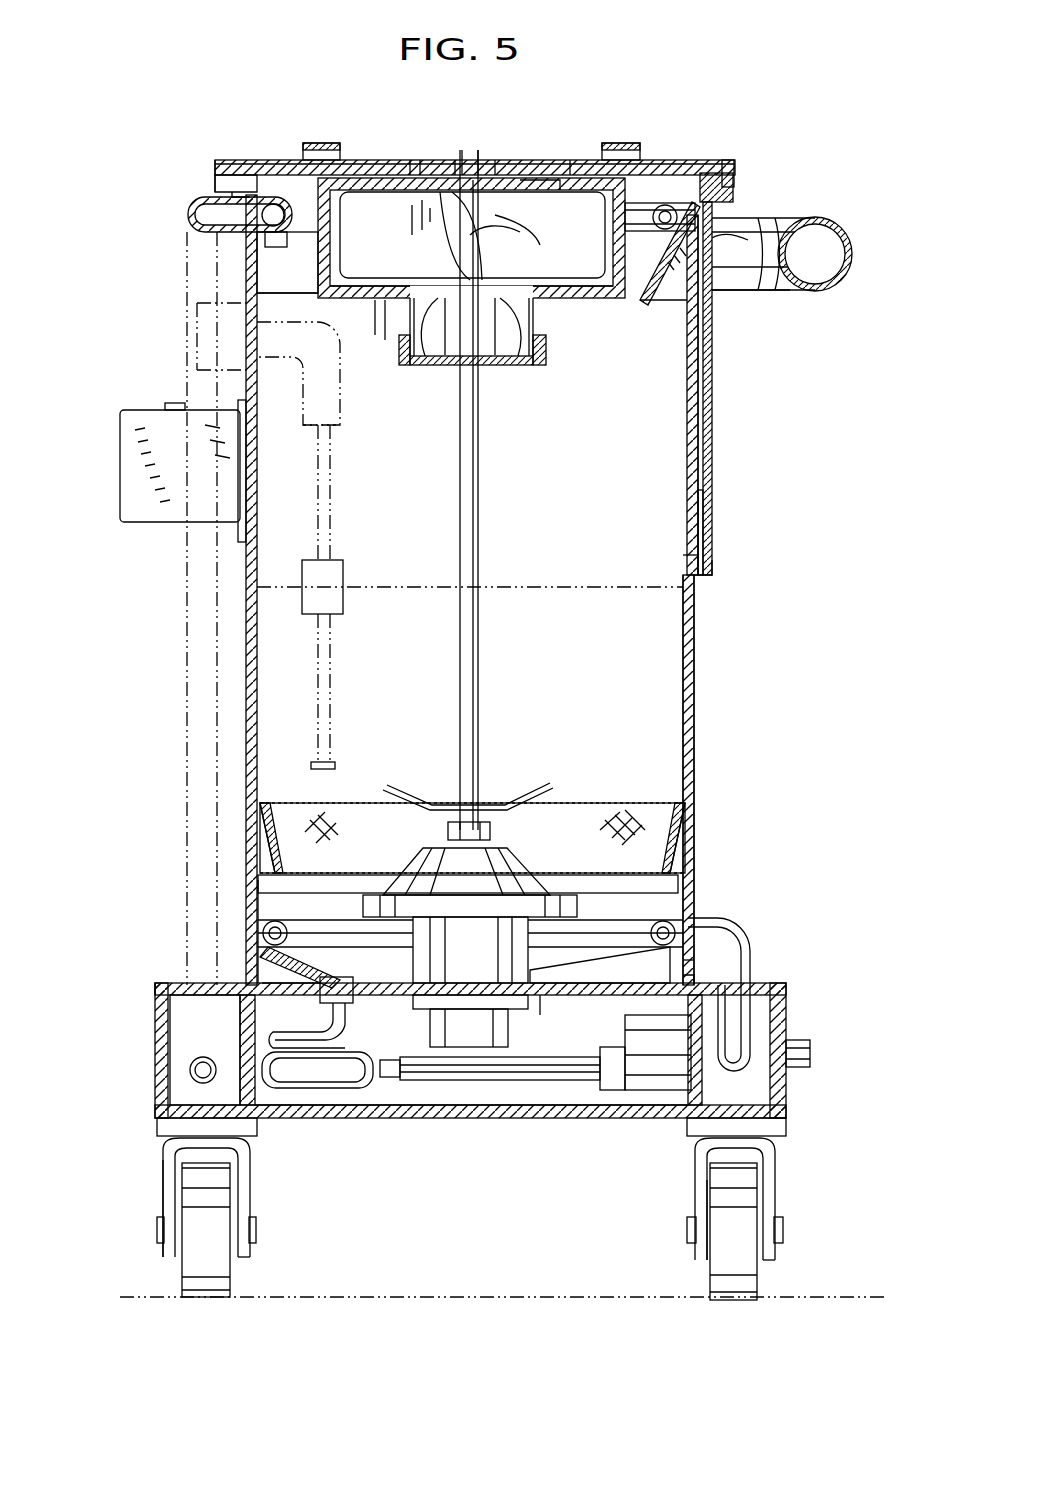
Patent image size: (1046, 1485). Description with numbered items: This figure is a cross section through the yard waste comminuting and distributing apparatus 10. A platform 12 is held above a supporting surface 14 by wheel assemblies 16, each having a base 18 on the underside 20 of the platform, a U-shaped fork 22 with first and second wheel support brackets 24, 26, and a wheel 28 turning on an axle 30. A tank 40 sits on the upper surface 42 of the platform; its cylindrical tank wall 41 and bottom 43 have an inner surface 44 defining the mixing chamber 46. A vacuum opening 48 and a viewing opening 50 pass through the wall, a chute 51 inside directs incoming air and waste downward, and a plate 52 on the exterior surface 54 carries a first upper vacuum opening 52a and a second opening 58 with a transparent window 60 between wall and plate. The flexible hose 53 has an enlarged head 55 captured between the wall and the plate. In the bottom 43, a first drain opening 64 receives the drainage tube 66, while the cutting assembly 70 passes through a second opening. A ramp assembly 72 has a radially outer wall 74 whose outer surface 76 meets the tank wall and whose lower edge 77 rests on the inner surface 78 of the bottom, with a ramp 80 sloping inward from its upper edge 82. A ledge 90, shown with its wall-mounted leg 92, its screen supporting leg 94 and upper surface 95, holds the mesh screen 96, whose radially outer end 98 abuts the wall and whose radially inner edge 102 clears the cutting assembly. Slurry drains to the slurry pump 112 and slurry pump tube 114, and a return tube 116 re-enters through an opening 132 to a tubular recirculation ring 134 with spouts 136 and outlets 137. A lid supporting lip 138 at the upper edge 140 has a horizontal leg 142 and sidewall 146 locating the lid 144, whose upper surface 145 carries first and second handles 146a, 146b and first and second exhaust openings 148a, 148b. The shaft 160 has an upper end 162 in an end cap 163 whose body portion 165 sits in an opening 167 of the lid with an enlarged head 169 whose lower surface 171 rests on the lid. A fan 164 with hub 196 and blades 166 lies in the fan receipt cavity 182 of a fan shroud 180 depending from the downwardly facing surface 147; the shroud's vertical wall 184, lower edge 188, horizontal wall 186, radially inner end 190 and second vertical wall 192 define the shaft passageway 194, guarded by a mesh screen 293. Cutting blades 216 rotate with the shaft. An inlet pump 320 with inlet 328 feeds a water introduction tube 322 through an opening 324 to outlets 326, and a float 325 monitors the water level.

The apparatus for comminuting and distributing yard waste 10 is at (740, 662).
The platform 12 is at (156, 1024).
The supporting surface 14 is at (395, 1297).
The wheel assembly 16 is at (130, 1165).
The base 18 is at (250, 1136).
The underside 20 is at (405, 1118).
The fork 22 is at (252, 1183).
The first wheel support bracket 24 is at (163, 1195).
The second wheel support bracket 26 is at (252, 1257).
The wheel 28 is at (205, 1283).
The axle 30 is at (170, 1232).
The tank 40 is at (694, 613).
The tank wall 41 is at (696, 745).
The upper surface 42 is at (160, 983).
The bottom 43 is at (595, 992).
The inner surface 44 is at (695, 708).
The mixing chamber 46 is at (608, 670).
The vacuum opening 48 is at (682, 300).
The viewing opening 50 is at (690, 558).
The chute 51 is at (640, 300).
The plate 52 is at (712, 437).
The first upper vacuum opening 52a is at (720, 292).
The flexible hose 53 is at (788, 218).
The exterior surface 54 is at (696, 645).
The enlarged head 55 is at (720, 240).
The second opening 58 is at (712, 560).
The transparent window 60 is at (702, 505).
The first drain opening 64 is at (335, 983).
The drainage tube 66 is at (350, 1000).
The cutting assembly 70 is at (540, 842).
The ramp assembly 72 is at (700, 950).
The radially outer wall 74 is at (262, 975).
The outer surface 76 is at (700, 975).
The lower edge 77 is at (262, 983).
The inner surface 78 is at (326, 805).
The ramp 80 is at (668, 918).
The upper edge 82 is at (690, 930).
The ledge 90 is at (262, 905).
The link 92 is at (258, 920).
The screen supporting leg 94 is at (272, 870).
The upper surface 95 is at (276, 870).
The mesh screen 96 is at (350, 870).
The radially outer end 98 is at (690, 828).
The radially inner edge 102 is at (403, 885).
The slurry pump 112 is at (440, 1080).
The slurry pump tube 114 is at (310, 1088).
The return tube 116 is at (190, 210).
The opening 132 is at (212, 165).
The tubular recirculation ring 134 is at (290, 160).
The spout 136 is at (290, 262).
The outlet 137 is at (268, 245).
The lid supporting lip 138 is at (220, 160).
The upper edge 140 is at (690, 195).
The horizontal leg 142 is at (725, 160).
The lid 144 is at (366, 160).
The upper surface 145 is at (412, 160).
The sidewall 146 is at (735, 172).
The first handle 146a is at (318, 143).
The second handle 146b is at (630, 143).
The downwardly facing surface 147 is at (545, 190).
The first exhaust opening 148a is at (388, 160).
The second exhaust opening 148b is at (570, 160).
The shaft 160 is at (480, 484).
The upper end 162 is at (492, 335).
The end cap 163 is at (480, 160).
The fan 164 is at (570, 292).
The body portion 165 is at (463, 150).
The blade 166 is at (408, 270).
The opening 167 is at (490, 190).
The enlarged head 169 is at (415, 185).
The lower surface 171 is at (498, 165).
The fan shroud 180 is at (570, 300).
The fan receipt cavity 182 is at (555, 300).
The vertical wall 184 is at (342, 300).
The horizontal wall 186 is at (392, 300).
The lower edge 188 is at (318, 293).
The radially inner end 190 is at (450, 365).
The second vertical wall 192 is at (428, 360).
The shaft passageway 194 is at (492, 345).
The hub 196 is at (472, 238).
The blade 216 is at (490, 800).
The mesh screen 293 is at (410, 400).
The inlet pump 320 is at (648, 1085).
The water introduction tube 322 is at (745, 995).
The opening 324 is at (690, 920).
The float 325 is at (338, 566).
The outlet 326 is at (257, 950).
The inlet 328 is at (808, 1055).